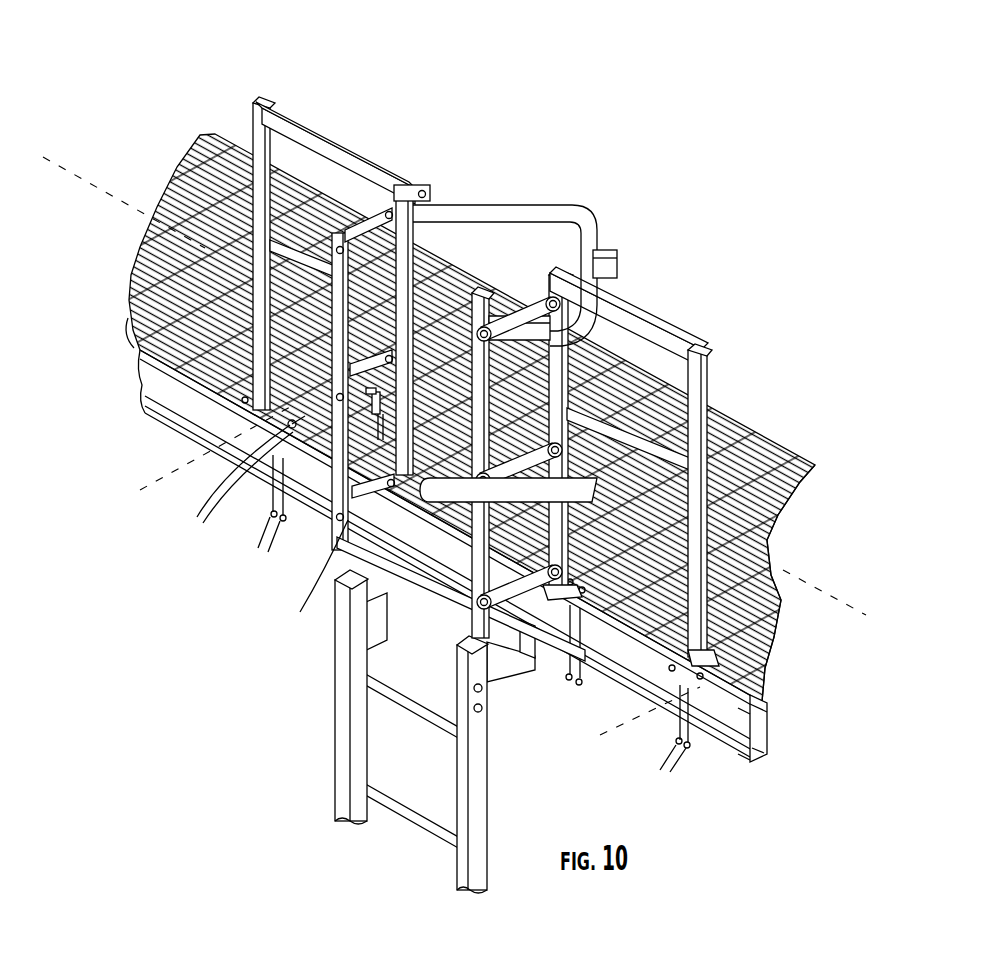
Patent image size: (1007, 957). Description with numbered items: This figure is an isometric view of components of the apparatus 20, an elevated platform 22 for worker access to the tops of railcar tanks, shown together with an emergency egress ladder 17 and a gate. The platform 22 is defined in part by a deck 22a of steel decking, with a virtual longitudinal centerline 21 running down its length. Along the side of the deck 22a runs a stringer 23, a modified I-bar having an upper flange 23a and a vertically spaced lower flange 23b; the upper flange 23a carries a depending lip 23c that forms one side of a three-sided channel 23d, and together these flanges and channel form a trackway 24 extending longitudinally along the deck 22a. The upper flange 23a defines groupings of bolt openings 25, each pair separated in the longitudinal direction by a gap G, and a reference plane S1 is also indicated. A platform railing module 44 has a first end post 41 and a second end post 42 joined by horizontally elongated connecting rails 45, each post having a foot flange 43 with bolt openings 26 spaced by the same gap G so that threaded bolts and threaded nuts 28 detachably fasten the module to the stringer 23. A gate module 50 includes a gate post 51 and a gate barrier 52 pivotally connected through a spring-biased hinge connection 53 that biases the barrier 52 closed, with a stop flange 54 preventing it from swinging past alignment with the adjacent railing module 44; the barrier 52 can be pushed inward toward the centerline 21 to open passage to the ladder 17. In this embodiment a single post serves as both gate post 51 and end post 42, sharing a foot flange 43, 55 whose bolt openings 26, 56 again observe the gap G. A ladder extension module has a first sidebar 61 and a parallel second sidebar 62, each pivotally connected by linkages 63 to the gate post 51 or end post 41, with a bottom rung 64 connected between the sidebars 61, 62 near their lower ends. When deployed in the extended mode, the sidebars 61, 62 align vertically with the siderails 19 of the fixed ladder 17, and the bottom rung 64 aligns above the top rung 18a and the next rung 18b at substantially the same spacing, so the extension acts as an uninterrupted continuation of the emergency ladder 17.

The emergency egress ladder 17 is at (409, 731).
The top rung 18a is at (390, 603).
The second uppermost rung 18b is at (423, 784).
The siderails 19 is at (338, 741).
The apparatus 20 is at (222, 80).
The longitudinal centerline 21 is at (88, 190).
The elevated platform 22 is at (455, 470).
The deck 22a is at (760, 480).
The stringer 23 is at (503, 578).
The upper flange 23a is at (162, 352).
The lower flange 23b is at (752, 765).
The depending lip 23c is at (742, 712).
The three-sided channel 23d is at (770, 697).
The trackway 24 is at (775, 748).
The bolt openings 25 is at (205, 375).
The bolt openings 26 is at (720, 628).
The threaded nuts 28 is at (468, 622).
The first end post 41 is at (252, 123).
The second end post 42 is at (710, 381).
The foot flange 43 is at (350, 530).
The platform railing module 44 is at (489, 352).
The connecting rails 45 is at (330, 152).
The gate module 50 is at (536, 272).
The gate post 51 is at (410, 273).
The gate barrier 52 is at (510, 218).
The spring-biased hinge connection 53 is at (426, 196).
The stop flange 54 is at (616, 263).
The foot flange 55 is at (370, 353).
The bolt openings 56 is at (337, 419).
The first sidebar 61 is at (332, 326).
The second sidebar 62 is at (333, 190).
The linkage 63 is at (378, 210).
The bottom rung 64 is at (309, 578).
The gap G is at (607, 733).
The plane S1 is at (142, 479).